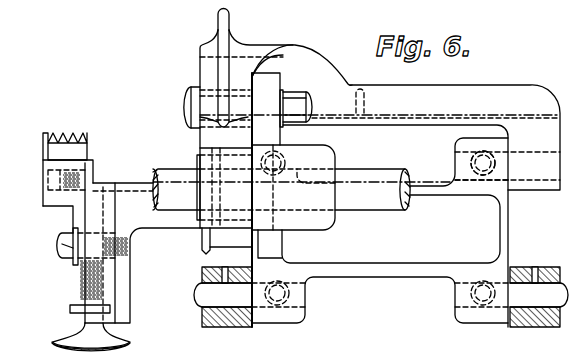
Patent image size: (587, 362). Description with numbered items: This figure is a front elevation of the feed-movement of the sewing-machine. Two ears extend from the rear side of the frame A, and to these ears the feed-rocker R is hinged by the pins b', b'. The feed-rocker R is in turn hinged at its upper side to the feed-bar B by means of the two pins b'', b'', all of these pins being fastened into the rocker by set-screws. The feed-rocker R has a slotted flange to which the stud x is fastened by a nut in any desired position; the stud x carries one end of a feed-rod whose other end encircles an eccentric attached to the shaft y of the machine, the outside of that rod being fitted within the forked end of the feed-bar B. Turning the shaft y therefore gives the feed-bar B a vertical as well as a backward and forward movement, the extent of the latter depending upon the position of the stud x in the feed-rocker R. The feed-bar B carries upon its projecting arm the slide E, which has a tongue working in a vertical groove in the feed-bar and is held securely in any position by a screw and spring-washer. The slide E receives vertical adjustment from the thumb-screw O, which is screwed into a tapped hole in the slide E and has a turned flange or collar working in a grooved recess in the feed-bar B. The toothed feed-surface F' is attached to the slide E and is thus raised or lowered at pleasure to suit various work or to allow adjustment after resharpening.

The feed-bar B is at (322, 186).
The stud x is at (186, 106).
The shaft y is at (301, 190).
The feed-rocker R is at (380, 198).
The pins b'' is at (526, 163).
The pins b' is at (374, 294).
The frame A is at (381, 302).
The ratchet F' is at (65, 169).
The slide E is at (85, 241).
The thumb-screw O is at (91, 328).